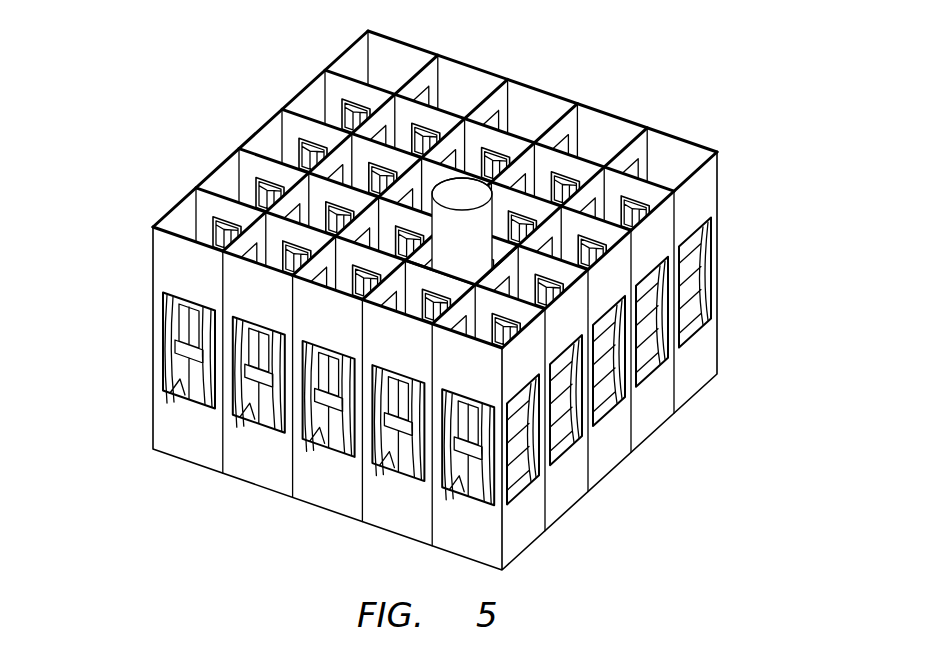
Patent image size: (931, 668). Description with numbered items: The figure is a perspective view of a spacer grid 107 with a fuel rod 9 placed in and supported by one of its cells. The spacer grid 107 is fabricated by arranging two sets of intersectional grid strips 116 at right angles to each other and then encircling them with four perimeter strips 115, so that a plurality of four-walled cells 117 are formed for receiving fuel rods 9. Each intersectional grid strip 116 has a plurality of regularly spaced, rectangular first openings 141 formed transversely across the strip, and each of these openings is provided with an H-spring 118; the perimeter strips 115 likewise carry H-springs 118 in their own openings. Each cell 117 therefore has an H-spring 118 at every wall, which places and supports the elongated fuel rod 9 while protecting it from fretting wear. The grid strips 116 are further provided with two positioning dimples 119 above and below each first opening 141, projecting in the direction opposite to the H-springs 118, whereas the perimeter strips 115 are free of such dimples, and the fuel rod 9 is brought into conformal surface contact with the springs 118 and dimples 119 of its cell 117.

The spacer grid 107 is at (617, 514).
The perimeter strip 115 is at (161, 427).
The H-spring 118 is at (173, 337).
The fuel rod 9 is at (471, 193).
The first opening 141 is at (548, 176).
The intersectional grid strip 116 is at (614, 183).
The positioning dimple 119 is at (640, 194).
The four-walled cell 117 is at (493, 250).